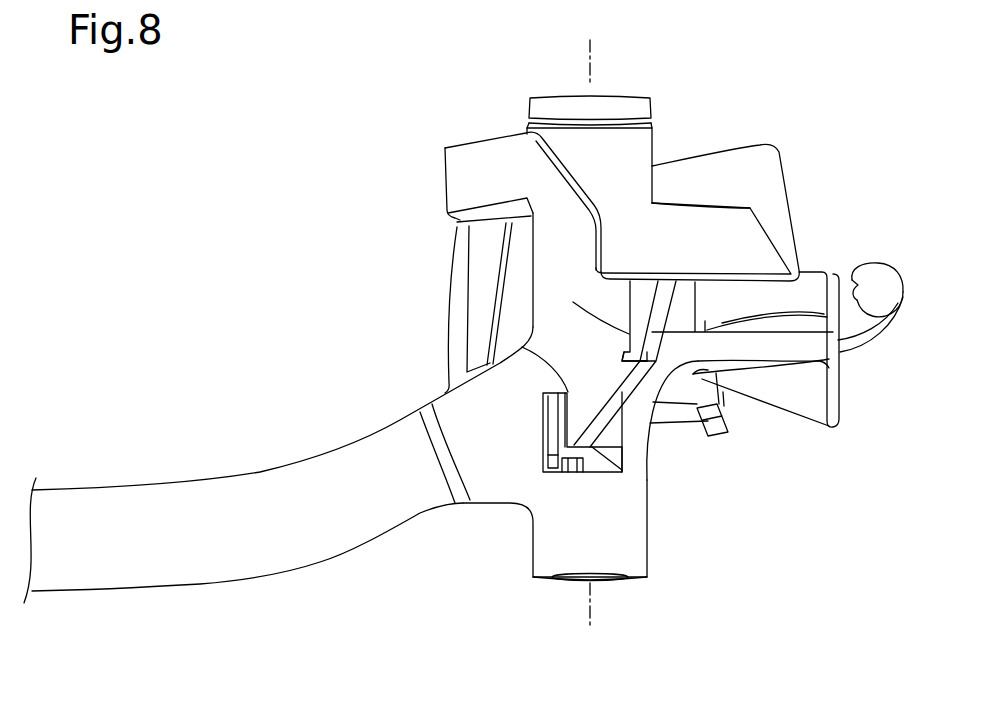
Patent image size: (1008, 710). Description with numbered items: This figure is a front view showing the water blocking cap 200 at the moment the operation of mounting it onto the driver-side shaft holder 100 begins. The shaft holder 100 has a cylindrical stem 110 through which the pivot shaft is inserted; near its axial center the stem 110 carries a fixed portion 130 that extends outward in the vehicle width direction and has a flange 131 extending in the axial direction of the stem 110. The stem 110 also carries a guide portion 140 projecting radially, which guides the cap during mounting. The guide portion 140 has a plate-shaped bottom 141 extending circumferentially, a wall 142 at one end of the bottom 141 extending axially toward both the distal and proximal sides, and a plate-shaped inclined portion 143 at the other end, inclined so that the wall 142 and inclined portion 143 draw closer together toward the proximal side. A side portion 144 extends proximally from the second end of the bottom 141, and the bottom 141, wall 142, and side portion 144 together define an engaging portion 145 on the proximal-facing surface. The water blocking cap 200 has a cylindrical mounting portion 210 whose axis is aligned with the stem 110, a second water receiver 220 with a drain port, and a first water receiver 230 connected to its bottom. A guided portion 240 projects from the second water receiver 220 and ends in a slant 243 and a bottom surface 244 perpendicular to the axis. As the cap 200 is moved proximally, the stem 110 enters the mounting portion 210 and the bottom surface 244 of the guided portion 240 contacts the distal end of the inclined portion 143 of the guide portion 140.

The driver-side shaft holder 100 is at (353, 432).
The stem 110 is at (533, 559).
The fixed portion 130 is at (856, 268).
The flange 131 is at (834, 392).
The guide portion 140 is at (543, 410).
The bottom 141 is at (543, 454).
The wall 142 is at (553, 428).
The inclined portion 143 is at (623, 409).
The side portion 144 is at (590, 460).
The engaging portion 145 is at (572, 476).
The water blocking cap 200 is at (447, 137).
The mounting portion 210 is at (653, 108).
The second water receiver 220 is at (777, 149).
The first water receiver 230 is at (690, 428).
The guided portion 240 is at (636, 303).
The slant 243 is at (622, 359).
The bottom surface 244 is at (640, 366).